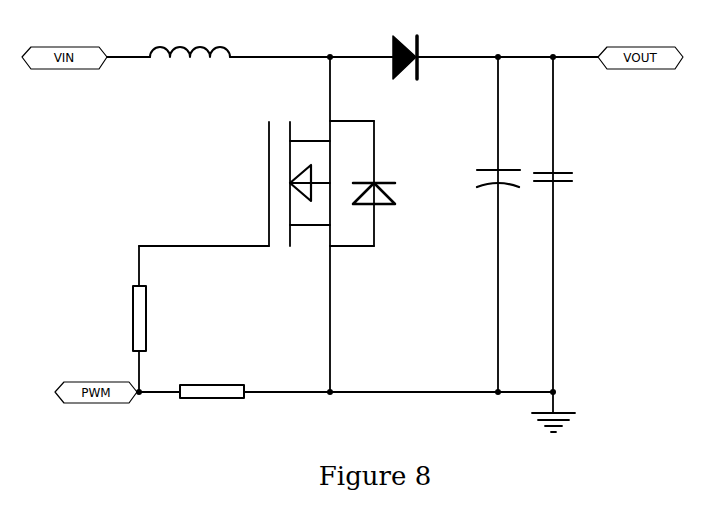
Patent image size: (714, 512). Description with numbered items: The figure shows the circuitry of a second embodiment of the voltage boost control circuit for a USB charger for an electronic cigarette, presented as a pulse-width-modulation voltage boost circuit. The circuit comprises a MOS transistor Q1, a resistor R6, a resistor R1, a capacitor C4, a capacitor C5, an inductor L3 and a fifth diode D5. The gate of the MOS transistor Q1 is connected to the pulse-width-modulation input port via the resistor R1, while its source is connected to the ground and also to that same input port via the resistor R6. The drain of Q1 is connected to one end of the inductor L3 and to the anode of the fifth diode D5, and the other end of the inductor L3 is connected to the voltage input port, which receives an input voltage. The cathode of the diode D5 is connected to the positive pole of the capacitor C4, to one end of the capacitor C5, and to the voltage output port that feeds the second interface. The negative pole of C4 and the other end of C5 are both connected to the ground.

The inductor L3 is at (190, 36).
The fifth diode D5 is at (380, 50).
The MOS transistor Q1 is at (303, 183).
The resistor R1 is at (163, 318).
The resistor R6 is at (212, 376).
The capacitor C4 is at (493, 170).
The capacitor C5 is at (562, 175).